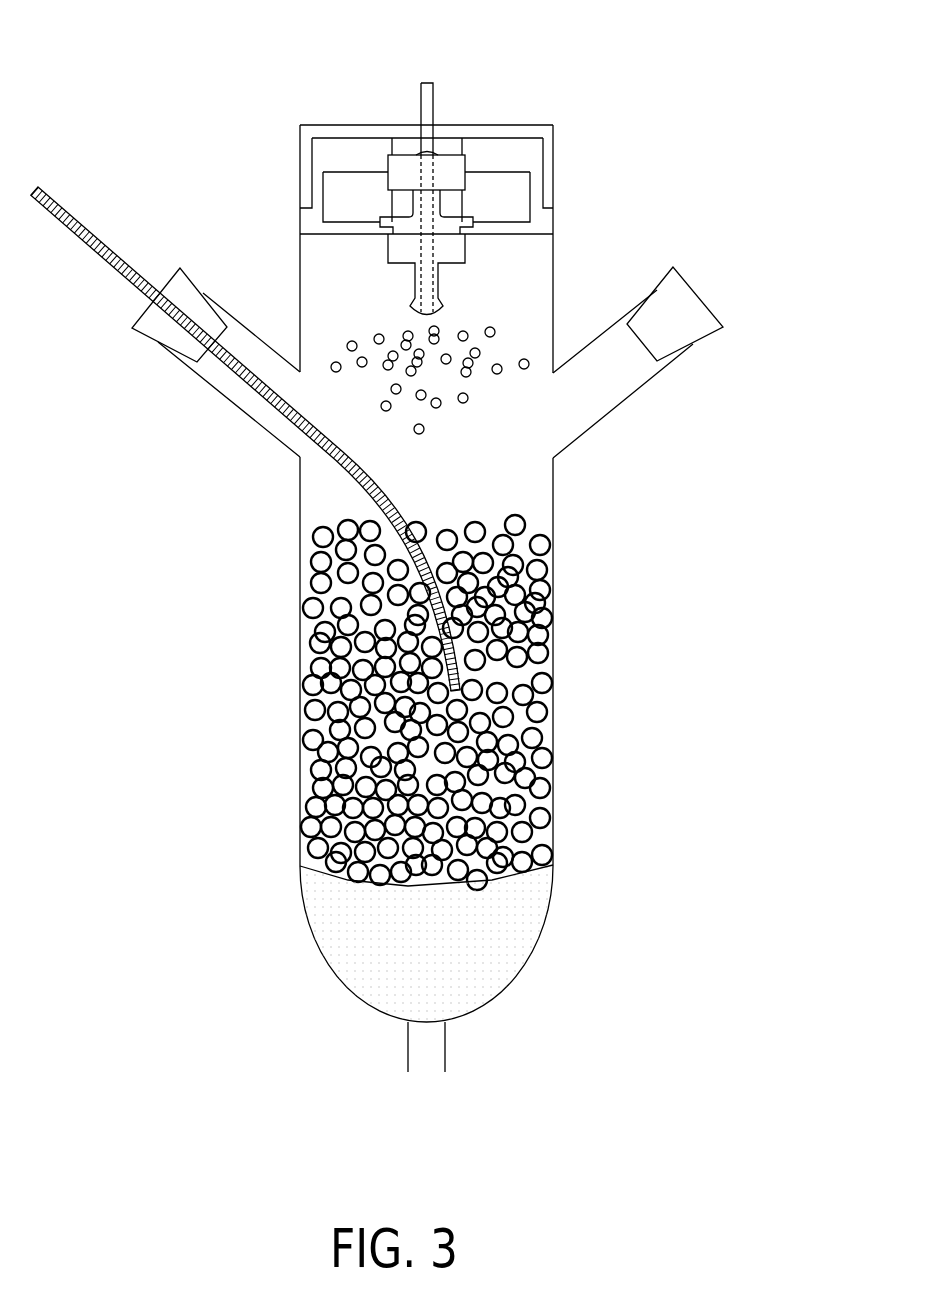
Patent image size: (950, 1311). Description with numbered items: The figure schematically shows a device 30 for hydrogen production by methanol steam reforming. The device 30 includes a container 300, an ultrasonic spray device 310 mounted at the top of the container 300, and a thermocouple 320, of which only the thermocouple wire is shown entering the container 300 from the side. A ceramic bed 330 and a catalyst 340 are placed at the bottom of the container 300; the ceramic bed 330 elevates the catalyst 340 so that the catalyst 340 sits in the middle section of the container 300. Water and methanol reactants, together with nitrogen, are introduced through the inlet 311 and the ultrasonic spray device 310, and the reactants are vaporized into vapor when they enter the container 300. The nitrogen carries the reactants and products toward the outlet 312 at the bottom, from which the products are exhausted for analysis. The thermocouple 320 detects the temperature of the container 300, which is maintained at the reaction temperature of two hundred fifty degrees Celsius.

The device for hydrogen production 30 is at (68, 29).
The container 300 is at (299, 513).
The ultrasonic spray device 310 is at (510, 190).
The inlet 311 is at (432, 93).
The outlet 312 is at (427, 1062).
The thermocouple 320 is at (78, 237).
The ceramic bed 330 is at (510, 941).
The catalyst 340 is at (510, 732).